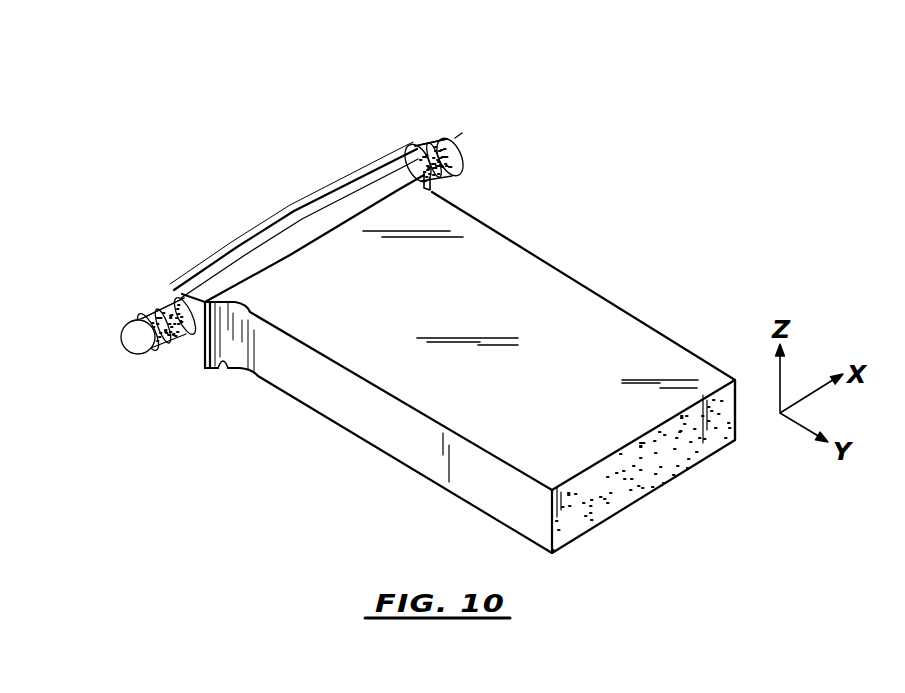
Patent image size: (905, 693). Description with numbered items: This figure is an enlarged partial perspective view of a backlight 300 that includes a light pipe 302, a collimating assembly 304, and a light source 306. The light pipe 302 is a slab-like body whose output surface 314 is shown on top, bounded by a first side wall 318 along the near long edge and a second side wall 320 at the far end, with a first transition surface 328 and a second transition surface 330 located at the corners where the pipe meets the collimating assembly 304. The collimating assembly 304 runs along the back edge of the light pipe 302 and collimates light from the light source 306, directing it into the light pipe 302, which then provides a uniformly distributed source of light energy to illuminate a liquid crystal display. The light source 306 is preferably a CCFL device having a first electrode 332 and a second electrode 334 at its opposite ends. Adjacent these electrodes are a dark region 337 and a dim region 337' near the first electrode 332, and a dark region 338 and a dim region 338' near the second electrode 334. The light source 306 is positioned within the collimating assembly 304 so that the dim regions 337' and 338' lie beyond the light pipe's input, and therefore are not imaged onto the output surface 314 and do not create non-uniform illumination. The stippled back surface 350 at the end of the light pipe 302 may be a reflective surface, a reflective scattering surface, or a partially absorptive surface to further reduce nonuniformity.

The backlight 300 is at (255, 421).
The light pipe 302 is at (578, 302).
The collimating assembly 304 is at (327, 202).
The light source 306 is at (419, 135).
The output surface 314 is at (469, 340).
The first side wall 318 is at (447, 468).
The second side wall 320 is at (737, 426).
The first transition surface 328 is at (223, 368).
The second transition surface 330 is at (432, 186).
The first electrode 332 is at (140, 340).
The second electrode 334 is at (462, 142).
The dark region 337 is at (146, 300).
The dim region 337' is at (186, 279).
The dark region 338 is at (498, 150).
The dim region 338' is at (375, 150).
The back surface 350 is at (620, 492).